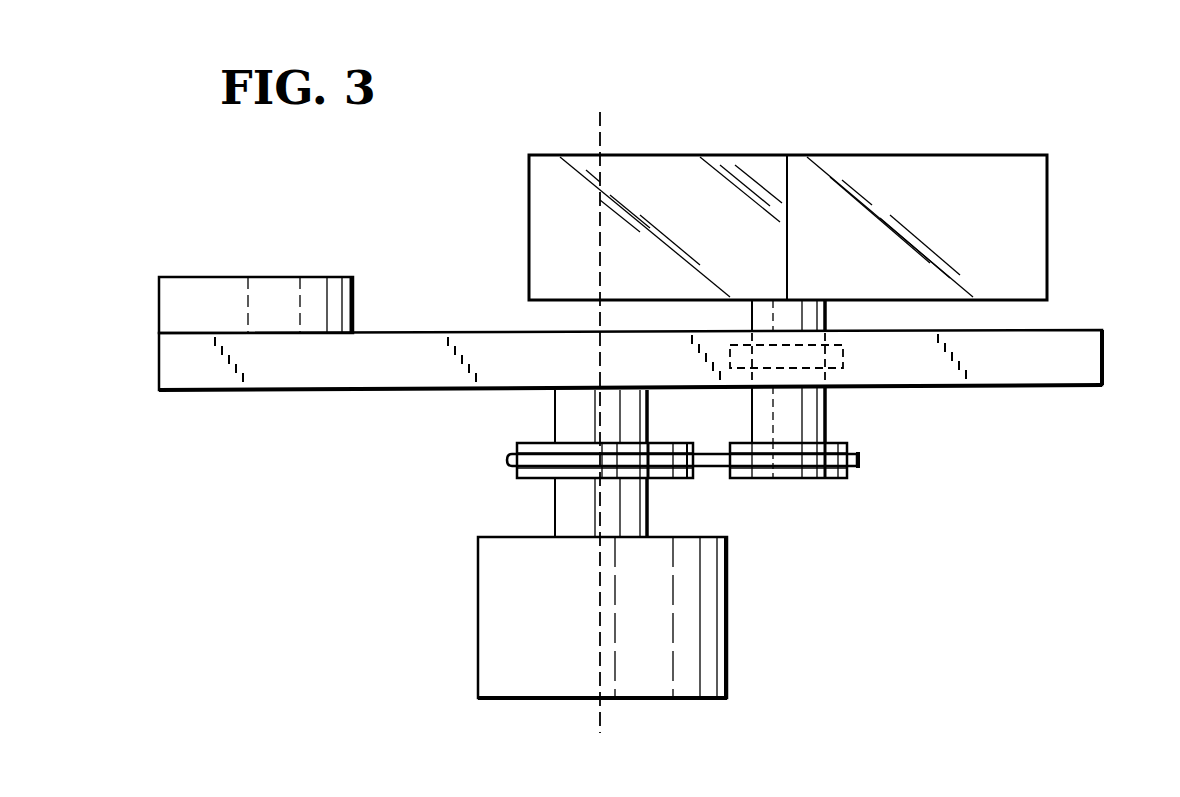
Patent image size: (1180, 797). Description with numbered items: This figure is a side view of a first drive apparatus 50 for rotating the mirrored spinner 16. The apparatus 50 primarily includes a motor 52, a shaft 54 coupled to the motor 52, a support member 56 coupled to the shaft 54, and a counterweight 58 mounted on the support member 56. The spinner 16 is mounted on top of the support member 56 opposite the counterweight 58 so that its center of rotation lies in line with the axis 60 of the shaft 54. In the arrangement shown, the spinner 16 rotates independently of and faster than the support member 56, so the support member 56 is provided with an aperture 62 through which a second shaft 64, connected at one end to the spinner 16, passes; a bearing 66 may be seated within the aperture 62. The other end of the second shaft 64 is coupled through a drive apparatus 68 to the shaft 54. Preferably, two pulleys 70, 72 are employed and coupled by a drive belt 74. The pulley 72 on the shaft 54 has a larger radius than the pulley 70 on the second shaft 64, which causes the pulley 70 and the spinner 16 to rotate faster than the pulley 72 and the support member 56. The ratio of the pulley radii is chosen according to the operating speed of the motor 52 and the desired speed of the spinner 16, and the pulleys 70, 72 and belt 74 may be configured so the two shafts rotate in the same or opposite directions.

The apparatus 50 is at (697, 86).
The mirrored spinner 16 is at (832, 155).
The axis 60 is at (600, 143).
The support member 56 is at (1102, 368).
The counterweight 58 is at (355, 296).
The aperture 62 is at (825, 334).
The bearing 66 is at (843, 368).
The second shaft 64 is at (808, 422).
The shaft 54 is at (555, 432).
The pulley 72 is at (520, 479).
The pulley 70 is at (845, 479).
The drive belt 74 is at (507, 459).
The drive apparatus 68 is at (712, 484).
The motor 52 is at (727, 625).